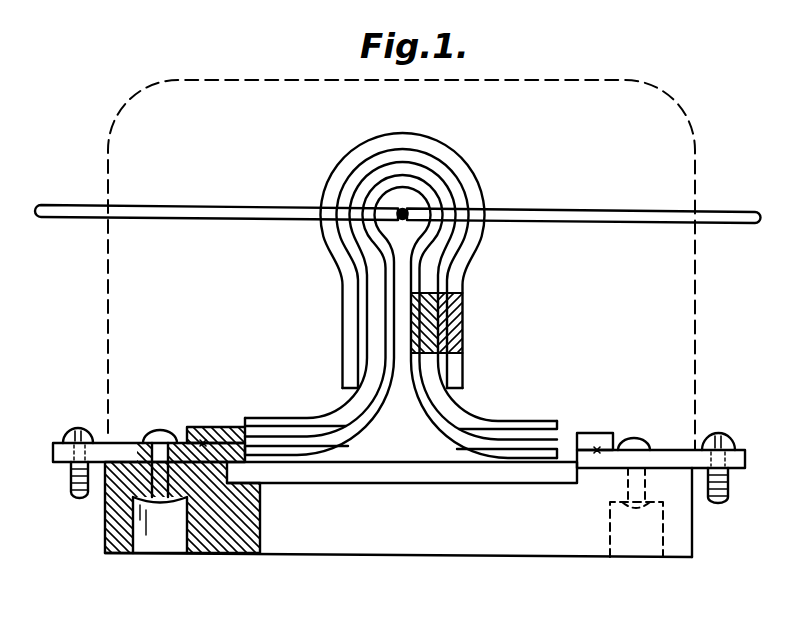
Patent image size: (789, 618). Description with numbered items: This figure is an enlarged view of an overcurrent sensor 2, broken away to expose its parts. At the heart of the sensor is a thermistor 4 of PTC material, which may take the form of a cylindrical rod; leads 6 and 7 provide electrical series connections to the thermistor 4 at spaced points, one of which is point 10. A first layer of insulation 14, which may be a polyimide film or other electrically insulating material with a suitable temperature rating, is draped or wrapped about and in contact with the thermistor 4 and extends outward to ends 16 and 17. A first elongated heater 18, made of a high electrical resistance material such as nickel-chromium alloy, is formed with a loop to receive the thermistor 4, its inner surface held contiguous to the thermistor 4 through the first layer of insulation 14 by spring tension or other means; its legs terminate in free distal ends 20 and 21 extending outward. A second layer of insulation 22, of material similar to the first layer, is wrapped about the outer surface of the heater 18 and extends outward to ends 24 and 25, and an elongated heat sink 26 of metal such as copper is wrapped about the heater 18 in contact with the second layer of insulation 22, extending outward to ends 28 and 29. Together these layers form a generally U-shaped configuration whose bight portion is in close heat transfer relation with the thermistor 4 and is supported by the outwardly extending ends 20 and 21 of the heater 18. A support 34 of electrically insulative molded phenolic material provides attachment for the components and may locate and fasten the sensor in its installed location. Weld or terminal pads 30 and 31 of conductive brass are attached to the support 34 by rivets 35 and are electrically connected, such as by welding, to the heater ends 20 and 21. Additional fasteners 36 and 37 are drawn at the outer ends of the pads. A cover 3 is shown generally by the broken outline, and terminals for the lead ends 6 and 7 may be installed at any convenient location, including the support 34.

The overcurrent sensor 2 is at (86, 100).
The cover 3 is at (560, 82).
The thermistor 4 is at (425, 200).
The lead 6 is at (65, 205).
The lead 7 is at (722, 216).
The spaced point 10 is at (400, 222).
The first layer of insulation 14 is at (420, 185).
The end of first layer of insulation 16 is at (283, 448).
The end of first layer of insulation 17 is at (540, 452).
The first elongated heater 18 is at (398, 166).
The free distal end of heater 20 is at (227, 430).
The free distal end of heater 21 is at (590, 433).
The second layer of insulation 22 is at (366, 166).
The end of second layer of insulation 24 is at (285, 420).
The end of second layer of insulation 25 is at (548, 427).
The elongated heat sink 26 is at (328, 191).
The end of heat sink 28 is at (350, 367).
The end of heat sink 29 is at (455, 378).
The weld or terminal pad 30 is at (112, 447).
The weld or terminal pad 31 is at (682, 455).
The support 34 is at (110, 521).
The rivets 35 is at (162, 432).
The terminal screw 36 is at (68, 478).
The terminal screw 37 is at (733, 490).